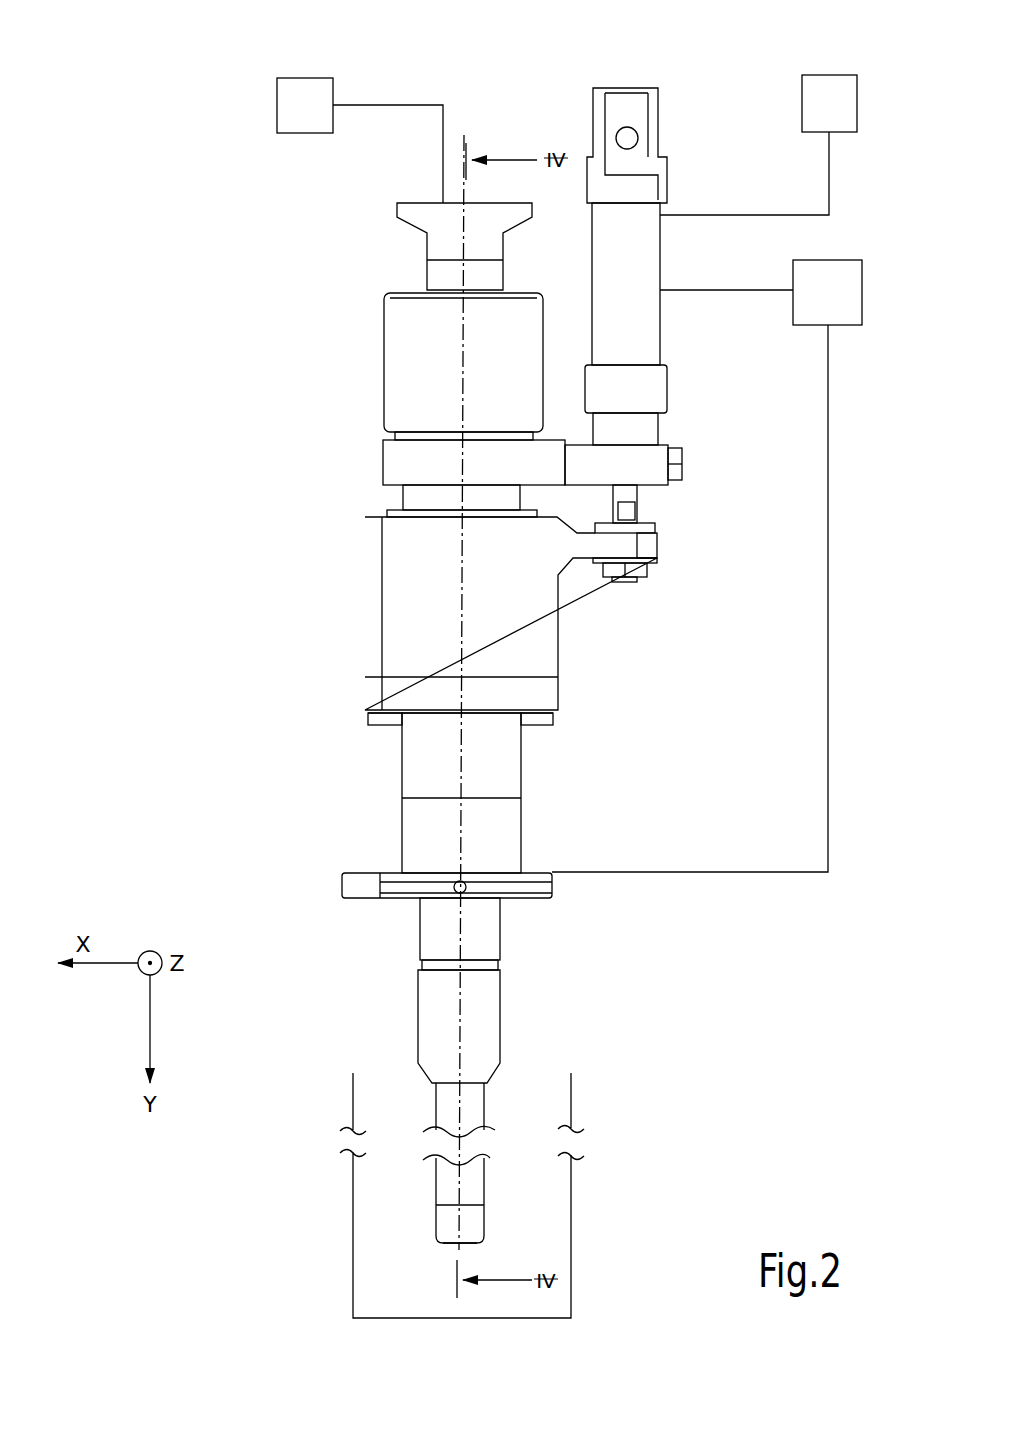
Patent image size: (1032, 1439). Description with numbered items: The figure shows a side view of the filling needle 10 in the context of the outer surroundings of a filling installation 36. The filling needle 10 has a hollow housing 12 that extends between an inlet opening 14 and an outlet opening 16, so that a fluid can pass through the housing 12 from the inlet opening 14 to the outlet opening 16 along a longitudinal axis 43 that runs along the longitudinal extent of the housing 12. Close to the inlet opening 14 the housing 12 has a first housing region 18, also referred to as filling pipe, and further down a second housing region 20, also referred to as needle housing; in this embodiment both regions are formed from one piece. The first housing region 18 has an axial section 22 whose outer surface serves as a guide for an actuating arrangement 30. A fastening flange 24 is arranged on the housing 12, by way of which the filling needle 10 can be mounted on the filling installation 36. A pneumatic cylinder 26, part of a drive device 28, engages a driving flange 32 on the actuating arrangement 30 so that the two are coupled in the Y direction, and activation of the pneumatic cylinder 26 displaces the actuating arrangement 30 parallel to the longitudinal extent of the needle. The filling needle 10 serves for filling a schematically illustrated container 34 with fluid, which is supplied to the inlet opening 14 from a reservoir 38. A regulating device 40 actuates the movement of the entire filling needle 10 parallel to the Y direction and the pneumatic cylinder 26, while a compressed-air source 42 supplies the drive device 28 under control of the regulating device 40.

The filling needle 10 is at (374, 740).
The housing 12 is at (412, 378).
The inlet opening 14 is at (425, 198).
The outlet opening 16 is at (444, 1249).
The first housing region 18 is at (303, 463).
The second housing region 20 is at (497, 1105).
The axial section 22 is at (215, 543).
The fastening flange 24 is at (658, 461).
The pneumatic cylinder 26 is at (637, 260).
The drive device 28 is at (727, 105).
The actuating arrangement 30 is at (398, 620).
The driving flange 32 is at (650, 545).
The container 34 is at (571, 1245).
The filling installation 36 is at (184, 236).
The reservoir 38 is at (292, 110).
The regulating device 40 is at (814, 307).
The compressed-air source 42 is at (817, 117).
The longitudinal axis 43 is at (460, 1007).